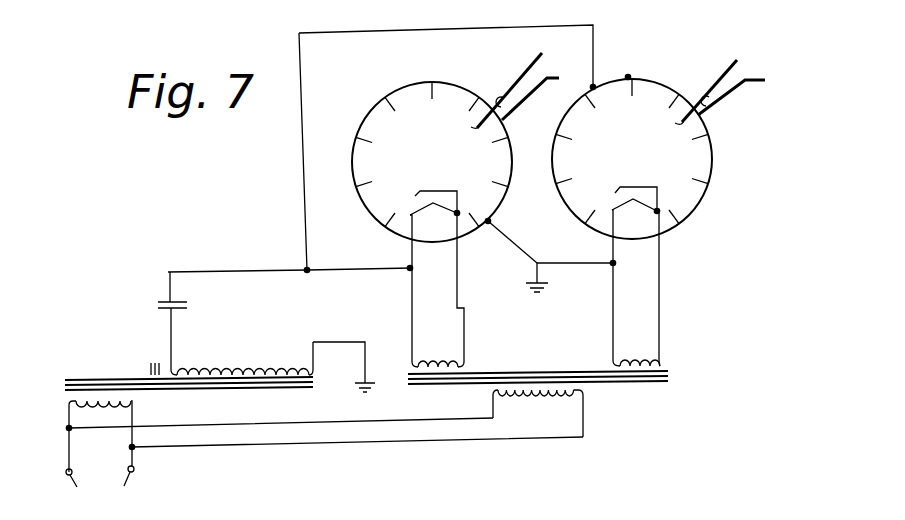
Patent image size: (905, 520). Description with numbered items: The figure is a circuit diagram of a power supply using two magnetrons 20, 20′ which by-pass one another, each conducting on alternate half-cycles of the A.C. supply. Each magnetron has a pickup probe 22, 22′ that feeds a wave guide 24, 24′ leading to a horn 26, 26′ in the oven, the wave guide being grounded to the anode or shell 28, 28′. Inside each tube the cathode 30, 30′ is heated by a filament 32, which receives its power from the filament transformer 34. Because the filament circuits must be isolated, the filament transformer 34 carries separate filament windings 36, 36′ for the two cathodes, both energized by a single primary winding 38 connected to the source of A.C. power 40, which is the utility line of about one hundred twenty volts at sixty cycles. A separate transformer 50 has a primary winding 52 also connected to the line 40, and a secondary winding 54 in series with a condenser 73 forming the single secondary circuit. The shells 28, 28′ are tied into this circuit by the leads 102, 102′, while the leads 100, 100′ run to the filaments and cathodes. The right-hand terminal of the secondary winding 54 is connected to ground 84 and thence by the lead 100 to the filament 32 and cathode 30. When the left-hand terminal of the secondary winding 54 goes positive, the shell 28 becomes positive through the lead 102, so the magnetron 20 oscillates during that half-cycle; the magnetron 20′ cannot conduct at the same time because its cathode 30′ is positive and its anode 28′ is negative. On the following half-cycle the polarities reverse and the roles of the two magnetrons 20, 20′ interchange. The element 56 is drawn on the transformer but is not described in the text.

The magnetron 20 is at (628, 75).
The second magnetron 20′ is at (400, 87).
The pickup probe 22 is at (672, 124).
The pickup probe of second magnetron 22′ is at (472, 126).
The wave guide 24 is at (718, 68).
The wave guide of second magnetron 24′ is at (500, 85).
The horn 26 is at (737, 58).
The horn of second magnetron 26′ is at (547, 47).
The anode 28 is at (712, 162).
The anode of second magnetron 28′ is at (514, 156).
The cathode 30 is at (633, 187).
The cathode of second magnetron 30′ is at (432, 191).
The filament 32 is at (535, 221).
The filament transformer 34 is at (674, 373).
The secondary winding 36 is at (645, 362).
The second filament winding 36′ is at (437, 362).
The primary winding 38 is at (563, 393).
The source of A.C. power 40 is at (125, 485).
The transformer 50 is at (276, 388).
The primary winding 52 is at (107, 418).
The secondary winding 54 is at (225, 368).
The winding tap 56 is at (150, 372).
The condenser 73 is at (170, 295).
The ground 84 is at (545, 283).
The lead 100 is at (595, 262).
The lead 100′ is at (385, 268).
The lead 102 is at (302, 165).
The lead 102′ is at (530, 250).